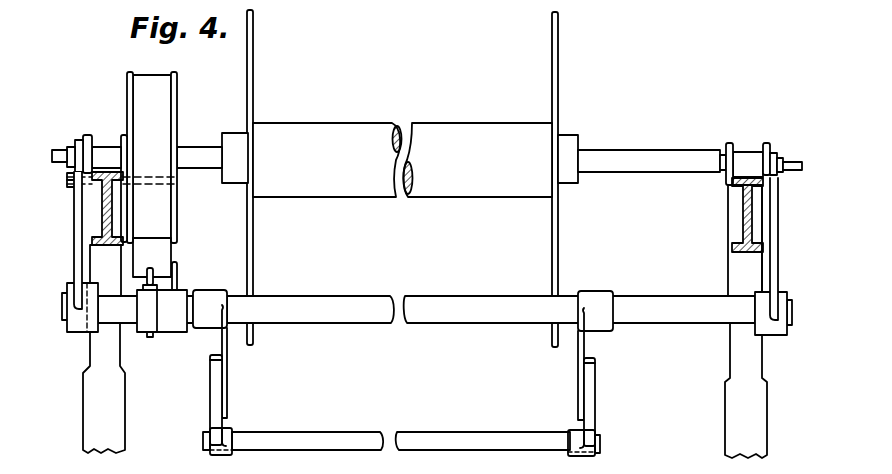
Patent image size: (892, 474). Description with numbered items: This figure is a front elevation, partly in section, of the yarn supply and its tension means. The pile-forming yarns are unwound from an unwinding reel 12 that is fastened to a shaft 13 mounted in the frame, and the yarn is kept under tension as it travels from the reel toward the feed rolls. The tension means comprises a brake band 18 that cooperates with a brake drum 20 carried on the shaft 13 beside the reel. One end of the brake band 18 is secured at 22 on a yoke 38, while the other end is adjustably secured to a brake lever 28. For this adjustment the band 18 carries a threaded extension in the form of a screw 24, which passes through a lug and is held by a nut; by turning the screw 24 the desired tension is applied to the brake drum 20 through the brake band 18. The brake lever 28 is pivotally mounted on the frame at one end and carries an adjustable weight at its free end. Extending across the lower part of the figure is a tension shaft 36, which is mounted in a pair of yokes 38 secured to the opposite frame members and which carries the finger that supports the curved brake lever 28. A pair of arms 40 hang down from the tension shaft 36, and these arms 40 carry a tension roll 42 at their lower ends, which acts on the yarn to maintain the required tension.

The unwinding reel 12 is at (258, 36).
The shaft 13 is at (57, 148).
The brake band 18 is at (163, 251).
The brake drum 20 is at (178, 93).
The securing point of brake band 22 is at (66, 179).
The screw 24 is at (150, 337).
The brake lever 28 is at (180, 280).
The tension shaft 36 is at (663, 322).
The yoke 38 is at (73, 250).
The arms 40 is at (212, 388).
The tension roll 42 is at (403, 446).